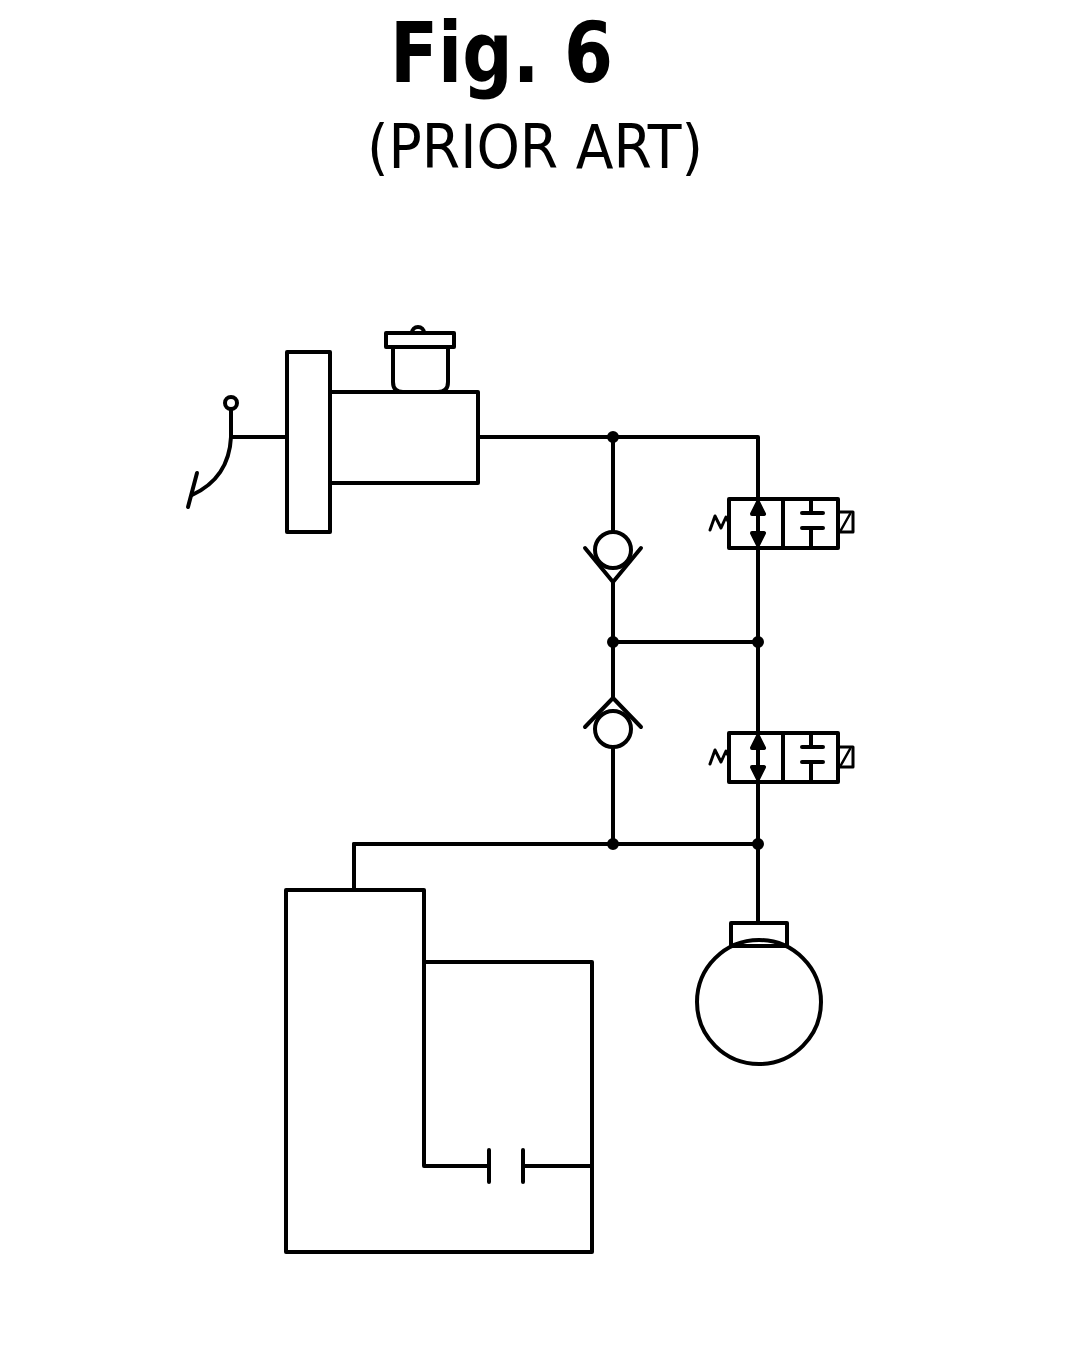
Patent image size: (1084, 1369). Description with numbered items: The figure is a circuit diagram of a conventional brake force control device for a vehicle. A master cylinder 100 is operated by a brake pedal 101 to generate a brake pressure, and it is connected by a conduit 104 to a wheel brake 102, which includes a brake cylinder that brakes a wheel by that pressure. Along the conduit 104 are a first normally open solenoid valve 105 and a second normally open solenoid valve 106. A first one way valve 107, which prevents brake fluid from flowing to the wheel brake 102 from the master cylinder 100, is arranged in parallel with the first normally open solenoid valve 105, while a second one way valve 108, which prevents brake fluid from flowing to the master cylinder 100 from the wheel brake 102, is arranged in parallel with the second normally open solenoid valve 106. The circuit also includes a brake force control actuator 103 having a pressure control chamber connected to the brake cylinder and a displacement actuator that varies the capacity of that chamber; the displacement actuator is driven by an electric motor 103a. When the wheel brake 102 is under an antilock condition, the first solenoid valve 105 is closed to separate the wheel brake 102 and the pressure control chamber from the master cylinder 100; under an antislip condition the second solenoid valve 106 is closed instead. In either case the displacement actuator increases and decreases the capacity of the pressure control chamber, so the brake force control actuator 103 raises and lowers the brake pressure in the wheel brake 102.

The master cylinder 100 is at (380, 460).
The brake pedal 101 is at (218, 467).
The wheel brake 102 is at (777, 932).
The brake force control actuator 103 is at (284, 1104).
The electric motor 103a is at (592, 1112).
The conduit 104 is at (667, 430).
The first normally open solenoid valve 105 is at (827, 497).
The second normally open solenoid valve 106 is at (828, 733).
The first one way valve 107 is at (585, 570).
The second one way valve 108 is at (595, 720).